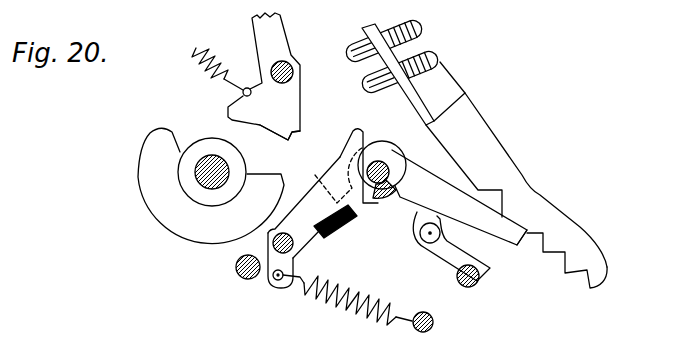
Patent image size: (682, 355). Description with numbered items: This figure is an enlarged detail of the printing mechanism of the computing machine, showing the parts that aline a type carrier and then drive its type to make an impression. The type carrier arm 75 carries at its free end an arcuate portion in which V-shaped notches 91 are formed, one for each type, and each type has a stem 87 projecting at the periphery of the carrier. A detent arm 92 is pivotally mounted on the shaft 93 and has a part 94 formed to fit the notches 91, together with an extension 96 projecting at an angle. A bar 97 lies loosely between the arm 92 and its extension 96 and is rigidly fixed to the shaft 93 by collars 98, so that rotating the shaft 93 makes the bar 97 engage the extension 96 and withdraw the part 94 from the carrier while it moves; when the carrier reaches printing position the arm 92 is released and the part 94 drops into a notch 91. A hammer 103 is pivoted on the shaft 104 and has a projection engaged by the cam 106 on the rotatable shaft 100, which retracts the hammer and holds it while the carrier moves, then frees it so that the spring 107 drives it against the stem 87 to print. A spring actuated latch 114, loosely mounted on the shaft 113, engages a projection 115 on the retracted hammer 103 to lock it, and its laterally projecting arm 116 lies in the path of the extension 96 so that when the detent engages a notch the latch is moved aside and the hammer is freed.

The arm 75 is at (573, 226).
The stem 87 is at (424, 48).
The V-shaped notches 91 is at (580, 275).
The arm 92 is at (447, 193).
The shaft 93 is at (376, 161).
The part 94 is at (527, 233).
The extension 96 is at (327, 175).
The bar 97 is at (388, 203).
The collars 98 is at (393, 147).
The rotatable shaft 100 is at (197, 120).
The hammer 103 is at (284, 40).
The shaft 104 is at (288, 63).
The cam 106 is at (148, 169).
The spring 107 is at (217, 38).
The shaft 113 is at (288, 298).
The spring actuated latches 114 is at (336, 150).
The projection 115 is at (318, 119).
The laterally projecting arm 116 is at (348, 246).